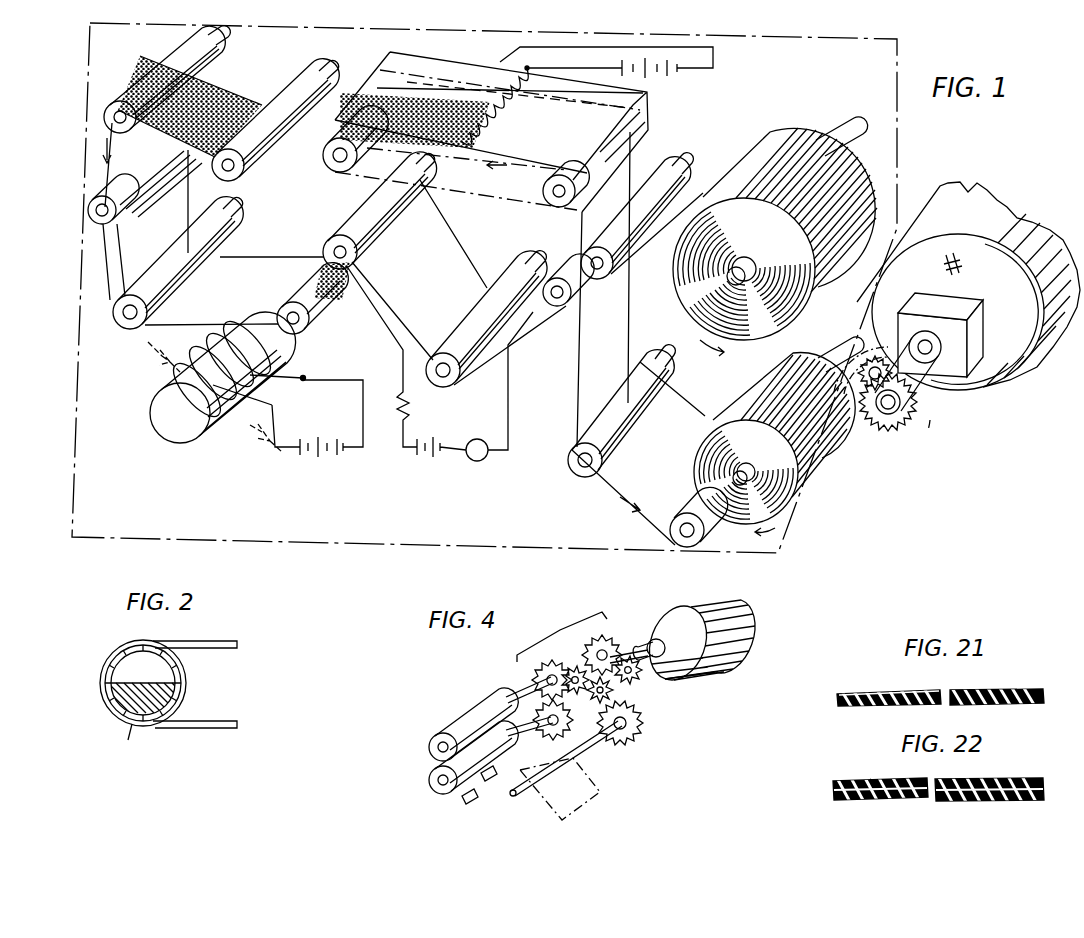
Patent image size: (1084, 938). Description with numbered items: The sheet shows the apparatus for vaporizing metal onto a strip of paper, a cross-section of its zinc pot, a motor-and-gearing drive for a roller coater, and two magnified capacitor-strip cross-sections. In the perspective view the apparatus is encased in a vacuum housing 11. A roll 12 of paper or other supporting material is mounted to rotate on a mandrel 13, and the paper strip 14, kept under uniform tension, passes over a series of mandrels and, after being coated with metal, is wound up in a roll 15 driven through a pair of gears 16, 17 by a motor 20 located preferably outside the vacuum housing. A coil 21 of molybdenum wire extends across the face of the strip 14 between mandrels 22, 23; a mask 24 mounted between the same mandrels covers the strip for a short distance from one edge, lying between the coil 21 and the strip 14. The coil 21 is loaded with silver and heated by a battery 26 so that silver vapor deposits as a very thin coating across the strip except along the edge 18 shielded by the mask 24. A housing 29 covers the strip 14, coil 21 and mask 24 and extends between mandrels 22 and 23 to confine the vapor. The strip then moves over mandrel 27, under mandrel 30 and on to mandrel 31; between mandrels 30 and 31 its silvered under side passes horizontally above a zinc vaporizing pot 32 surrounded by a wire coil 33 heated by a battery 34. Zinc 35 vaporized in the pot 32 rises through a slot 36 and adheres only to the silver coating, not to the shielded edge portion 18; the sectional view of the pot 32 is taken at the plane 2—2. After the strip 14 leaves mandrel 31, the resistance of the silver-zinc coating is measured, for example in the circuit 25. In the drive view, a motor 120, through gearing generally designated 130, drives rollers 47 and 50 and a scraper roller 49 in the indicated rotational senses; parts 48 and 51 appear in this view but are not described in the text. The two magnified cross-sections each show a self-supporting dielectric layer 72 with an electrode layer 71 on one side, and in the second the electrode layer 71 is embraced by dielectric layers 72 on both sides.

In FIG. 1, the section plane 2 is at (209, 400).
In FIG. 1, the vacuum housing 11 is at (270, 548).
In FIG. 1, the roll of paper 12 is at (855, 180).
In FIG. 1, the mandrel 13 is at (845, 128).
In FIG. 1, the paper strip 14 is at (580, 229).
In FIG. 1, the roll 15 is at (820, 460).
In FIG. 1, the gear 16 is at (870, 408).
In FIG. 1, the gear 17 is at (886, 428).
In FIG. 1, the edge portion 18 is at (228, 72).
In FIG. 1, the motor 20 is at (946, 190).
In FIG. 1, the coil of molybdenum wire 21 is at (486, 131).
In FIG. 1, the mandrel 22 is at (541, 190).
In FIG. 1, the mandrel 23 is at (336, 170).
In FIG. 1, the mask 24 is at (473, 78).
In FIG. 1, the circuit 25 is at (453, 452).
In FIG. 1, the battery 26 is at (668, 82).
In FIG. 1, the mandrel 27 is at (128, 130).
In FIG. 1, the housing 29 is at (363, 76).
In FIG. 1, the mandrel 30 is at (124, 330).
In FIG. 1, the mandrel 31 is at (298, 332).
In FIG. 1, the zinc vaporizing pot 32 is at (170, 430).
In FIG. 2, the zinc vaporizing pot 32 is at (187, 694).
In FIG. 1, the wire coil 33 is at (155, 386).
In FIG. 2, the wire coil 33 is at (121, 742).
In FIG. 1, the battery 34 is at (318, 456).
In FIG. 2, the zinc 35 is at (132, 683).
In FIG. 1, the slot 36 is at (196, 347).
In FIG. 2, the slot 36 is at (145, 650).
In FIG. 4, the roller 47 is at (430, 740).
In FIG. 4, the collar 48 is at (489, 782).
In FIG. 4, the scraper roller 49 is at (598, 750).
In FIG. 4, the roller 50 is at (430, 780).
In FIG. 4, the collar 51 is at (470, 800).
In FIG. 4, the motor 120 is at (752, 624).
In FIG. 4, the gearing 130 is at (582, 675).
In FIG. 21, the electrode layer 71 is at (1045, 700).
In FIG. 22, the electrode layer 71 is at (1043, 795).
In FIG. 21, the dielectric layer 72 is at (893, 693).
In FIG. 22, the dielectric layer 72 is at (876, 782).